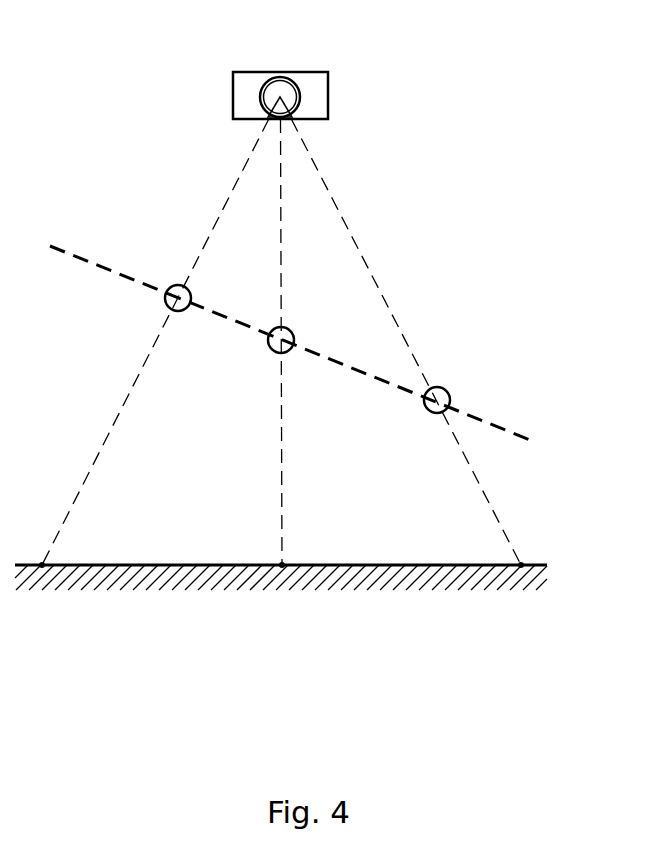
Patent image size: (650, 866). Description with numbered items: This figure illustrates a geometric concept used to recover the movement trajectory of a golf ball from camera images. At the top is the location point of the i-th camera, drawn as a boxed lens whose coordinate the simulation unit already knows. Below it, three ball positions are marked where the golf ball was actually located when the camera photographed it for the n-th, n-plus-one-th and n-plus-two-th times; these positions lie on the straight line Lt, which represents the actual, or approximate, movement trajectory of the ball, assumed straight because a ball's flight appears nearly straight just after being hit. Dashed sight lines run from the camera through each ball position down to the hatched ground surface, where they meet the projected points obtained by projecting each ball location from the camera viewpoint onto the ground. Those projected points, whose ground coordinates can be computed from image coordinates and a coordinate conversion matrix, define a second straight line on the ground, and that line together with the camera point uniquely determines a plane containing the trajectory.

The straight line (actual movement trajectory of the golf ball) Lt is at (276, 332).